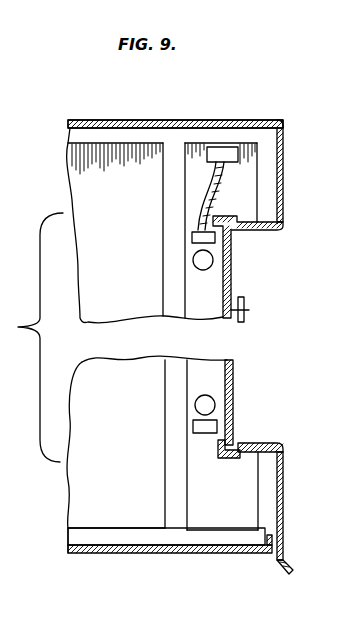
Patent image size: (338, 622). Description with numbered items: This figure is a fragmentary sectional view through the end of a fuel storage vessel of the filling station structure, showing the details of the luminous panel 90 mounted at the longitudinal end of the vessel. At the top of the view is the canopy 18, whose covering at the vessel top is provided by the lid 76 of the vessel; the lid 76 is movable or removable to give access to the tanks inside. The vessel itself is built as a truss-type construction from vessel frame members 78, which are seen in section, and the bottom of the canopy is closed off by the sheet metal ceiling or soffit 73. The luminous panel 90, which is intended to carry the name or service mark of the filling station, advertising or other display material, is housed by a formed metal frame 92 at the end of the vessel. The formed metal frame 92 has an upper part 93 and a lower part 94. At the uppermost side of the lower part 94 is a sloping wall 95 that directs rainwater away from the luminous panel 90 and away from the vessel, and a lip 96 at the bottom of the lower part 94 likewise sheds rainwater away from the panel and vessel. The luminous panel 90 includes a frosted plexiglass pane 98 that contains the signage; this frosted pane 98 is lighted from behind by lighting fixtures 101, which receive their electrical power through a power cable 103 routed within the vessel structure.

The canopy 18 is at (178, 117).
The lid 76 is at (103, 116).
The formed metal frame 92 is at (266, 117).
The upper part 93 is at (262, 235).
The power cable 103 is at (200, 187).
The lighting fixtures 101 is at (193, 261).
The frosted plexiglass pane 98 is at (251, 310).
The luminous panel 90 is at (236, 396).
The sloping wall 95 is at (262, 442).
The lower part 94 is at (283, 505).
The lip 96 is at (265, 560).
The sheet metal ceiling or soffit 73 is at (138, 555).
The vessel frame members 78 is at (122, 530).